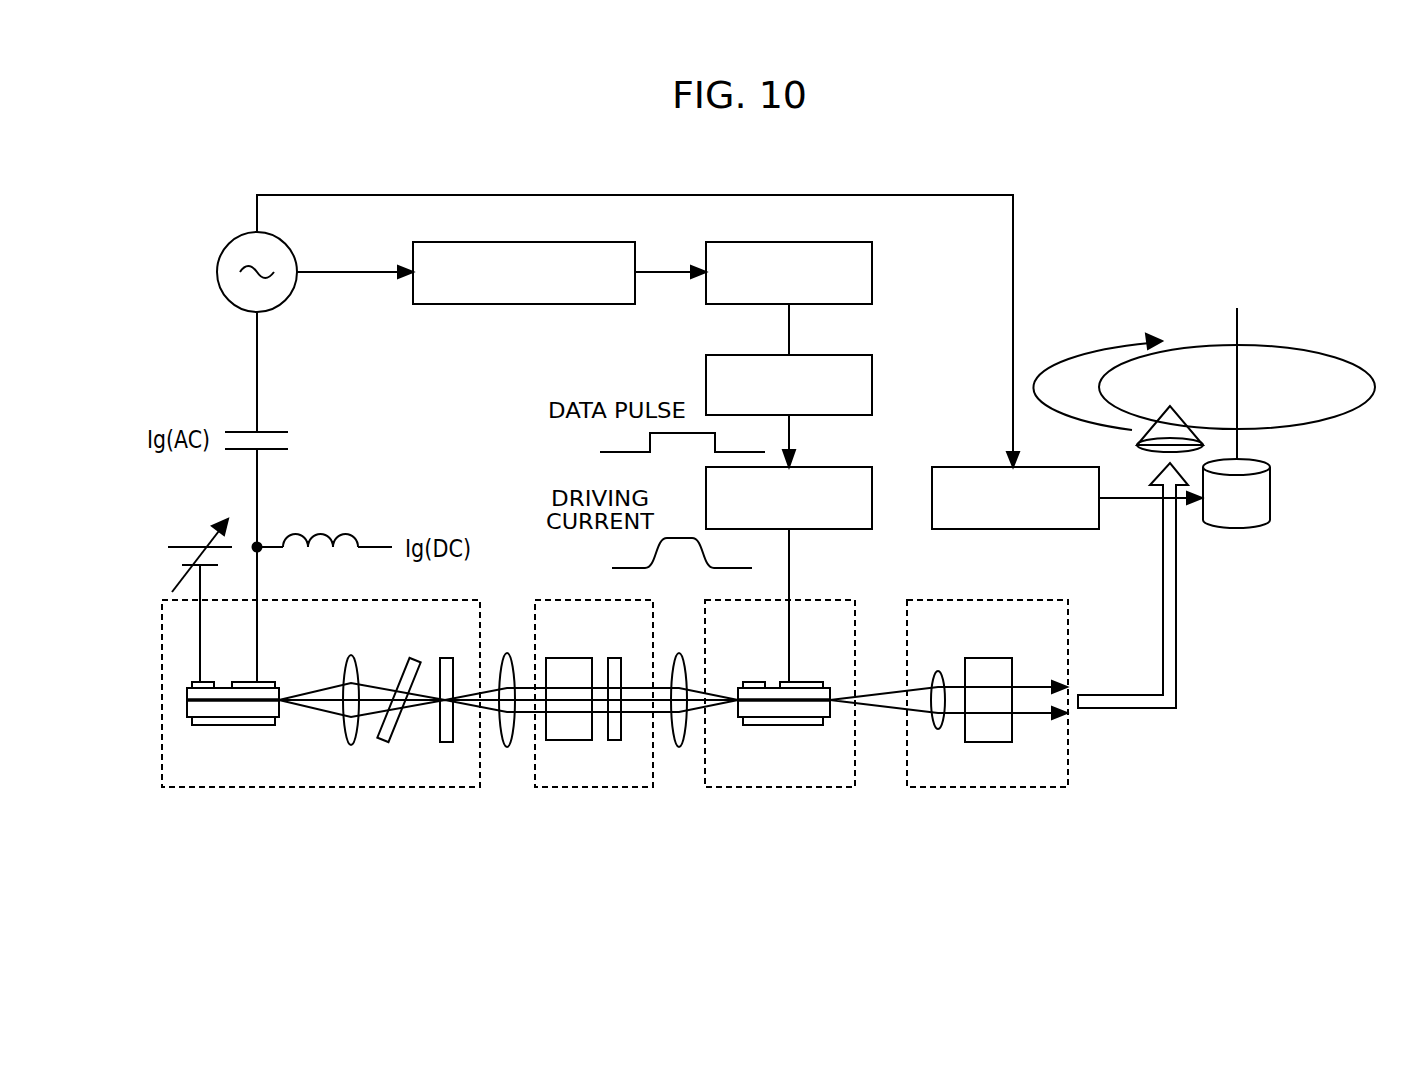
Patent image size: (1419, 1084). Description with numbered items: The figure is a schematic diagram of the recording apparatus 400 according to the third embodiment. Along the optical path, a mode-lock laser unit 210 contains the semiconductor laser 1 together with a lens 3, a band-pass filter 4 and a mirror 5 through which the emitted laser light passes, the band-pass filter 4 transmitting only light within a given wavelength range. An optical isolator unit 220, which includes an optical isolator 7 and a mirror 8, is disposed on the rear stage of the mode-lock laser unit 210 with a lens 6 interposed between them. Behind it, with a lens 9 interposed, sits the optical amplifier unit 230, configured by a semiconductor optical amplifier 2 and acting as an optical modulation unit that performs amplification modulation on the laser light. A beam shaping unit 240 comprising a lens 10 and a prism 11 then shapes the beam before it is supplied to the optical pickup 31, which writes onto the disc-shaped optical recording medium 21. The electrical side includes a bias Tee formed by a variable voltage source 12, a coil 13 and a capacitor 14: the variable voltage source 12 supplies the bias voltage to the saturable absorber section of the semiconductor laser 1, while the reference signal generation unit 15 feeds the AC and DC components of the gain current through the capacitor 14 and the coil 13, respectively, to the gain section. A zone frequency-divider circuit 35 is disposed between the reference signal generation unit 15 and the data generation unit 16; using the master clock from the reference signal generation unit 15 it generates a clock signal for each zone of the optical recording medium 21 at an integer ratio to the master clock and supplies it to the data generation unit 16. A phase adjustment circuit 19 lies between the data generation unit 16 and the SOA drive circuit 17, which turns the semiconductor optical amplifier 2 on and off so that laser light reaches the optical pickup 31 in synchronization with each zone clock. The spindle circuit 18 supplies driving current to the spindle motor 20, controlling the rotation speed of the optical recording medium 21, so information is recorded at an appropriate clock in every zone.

The semiconductor laser 1 is at (230, 725).
The semiconductor optical amplifier 2 is at (785, 725).
The lens 3 is at (351, 655).
The band-pass filter 4 is at (410, 658).
The mirror 5 is at (447, 658).
The lens 6 is at (507, 653).
The optical isolator 7 is at (569, 658).
The mirror 8 is at (615, 658).
The lens 9 is at (679, 653).
The lens 10 is at (938, 671).
The prism 11 is at (988, 658).
The variable voltage source 12 is at (168, 552).
The coil 13 is at (322, 527).
The capacitor 14 is at (270, 432).
The reference signal generation unit 15 is at (290, 250).
The data generation unit 16 is at (874, 277).
The SOA drive circuit 17 is at (822, 467).
The spindle circuit 18 is at (964, 466).
The phase adjustment circuit 19 is at (874, 383).
The spindle motor 20 is at (1272, 492).
The optical recording medium 21 is at (1298, 348).
The optical pickup 31 is at (1133, 450).
The zone frequency-divider circuit 35 is at (585, 242).
The mode-lock laser unit 210 is at (328, 787).
The optical isolator unit 220 is at (596, 787).
The optical amplifier unit 230 is at (780, 787).
The beam shaping unit 240 is at (993, 787).
The recording apparatus 400 is at (443, 151).